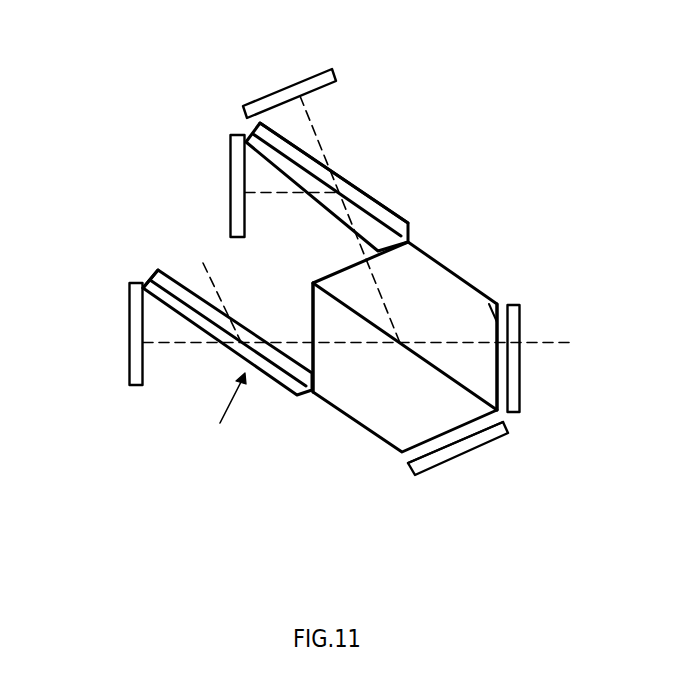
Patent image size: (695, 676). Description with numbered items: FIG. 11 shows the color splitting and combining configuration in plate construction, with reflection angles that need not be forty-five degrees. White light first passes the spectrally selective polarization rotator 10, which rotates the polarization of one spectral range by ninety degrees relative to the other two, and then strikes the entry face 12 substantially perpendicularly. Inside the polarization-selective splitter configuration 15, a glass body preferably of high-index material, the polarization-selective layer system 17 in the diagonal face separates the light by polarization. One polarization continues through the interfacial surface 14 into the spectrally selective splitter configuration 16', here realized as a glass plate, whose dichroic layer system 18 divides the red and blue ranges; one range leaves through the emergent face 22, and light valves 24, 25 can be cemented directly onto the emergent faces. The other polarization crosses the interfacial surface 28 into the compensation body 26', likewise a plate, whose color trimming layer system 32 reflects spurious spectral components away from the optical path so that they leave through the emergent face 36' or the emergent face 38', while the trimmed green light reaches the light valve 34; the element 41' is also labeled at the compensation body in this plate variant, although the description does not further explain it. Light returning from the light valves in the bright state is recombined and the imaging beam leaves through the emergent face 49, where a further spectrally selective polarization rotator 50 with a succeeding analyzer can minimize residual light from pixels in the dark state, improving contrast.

The spectrally selective polarization rotator 10 is at (513, 326).
The entry face 12 is at (496, 302).
The interfacial surface 14 is at (398, 220).
The polarization-selective splitter configuration 15 is at (383, 387).
The spectrally selective splitter configuration 16' is at (334, 173).
The polarization-selective layer system 17 is at (417, 357).
The dichroic or spectrally selective layer system 18 is at (368, 212).
The emergent face 22 is at (244, 170).
The light valve 24 is at (277, 100).
The light valve 25 is at (238, 192).
The compensation body 26' is at (223, 414).
The interfacial surface 28 is at (317, 392).
The color trimming layer system 32 is at (275, 368).
The light valve 34 is at (136, 321).
The emergent face 36' is at (228, 347).
The emergent face 38' is at (201, 275).
The beam path 41' is at (126, 276).
The emergent face 49 is at (445, 434).
The spectrally selective polarization rotator 50 is at (481, 439).